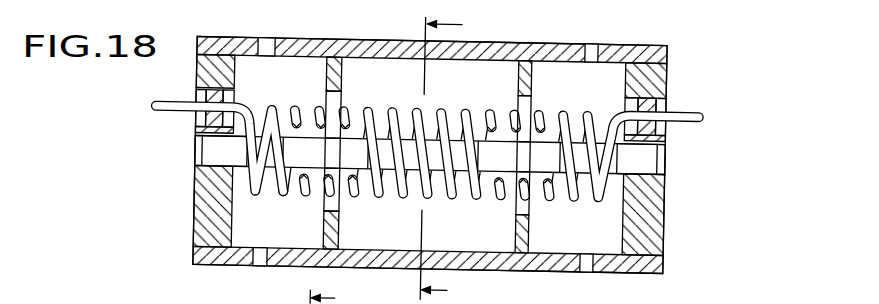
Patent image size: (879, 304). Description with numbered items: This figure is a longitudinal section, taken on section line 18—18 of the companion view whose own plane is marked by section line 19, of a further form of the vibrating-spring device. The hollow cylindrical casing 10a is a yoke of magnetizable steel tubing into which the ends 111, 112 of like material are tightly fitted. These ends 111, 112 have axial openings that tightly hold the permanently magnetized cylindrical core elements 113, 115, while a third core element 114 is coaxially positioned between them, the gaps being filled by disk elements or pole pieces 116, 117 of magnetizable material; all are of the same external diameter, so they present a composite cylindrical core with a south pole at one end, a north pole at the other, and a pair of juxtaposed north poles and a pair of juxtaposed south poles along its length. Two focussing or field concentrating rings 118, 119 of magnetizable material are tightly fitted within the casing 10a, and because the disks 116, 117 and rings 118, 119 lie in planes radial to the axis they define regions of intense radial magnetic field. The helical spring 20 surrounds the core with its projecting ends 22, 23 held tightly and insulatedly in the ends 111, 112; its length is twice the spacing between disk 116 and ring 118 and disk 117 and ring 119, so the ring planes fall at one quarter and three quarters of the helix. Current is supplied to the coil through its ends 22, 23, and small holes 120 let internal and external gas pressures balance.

The hollow cylindrical casing 10a is at (352, 44).
The section line 18— 18 is at (334, 296).
The section line 19 is at (452, 158).
The helical spring 20 is at (465, 108).
The projecting end of spring 22 is at (173, 116).
The projecting end of spring 23 is at (688, 108).
The end 111 is at (202, 231).
The end 112 is at (653, 214).
The permanently magnetized cylindrical core element 113 is at (197, 167).
The third core element 114 is at (386, 146).
The permanently magnetized cylindrical core element 115 is at (650, 165).
The disk element or pole piece 116 is at (337, 160).
The disk element or pole piece 117 is at (522, 158).
The focussing or field concentrating ring 118 is at (337, 230).
The focussing or field concentrating ring 119 is at (514, 231).
The small holes 120 is at (264, 41).